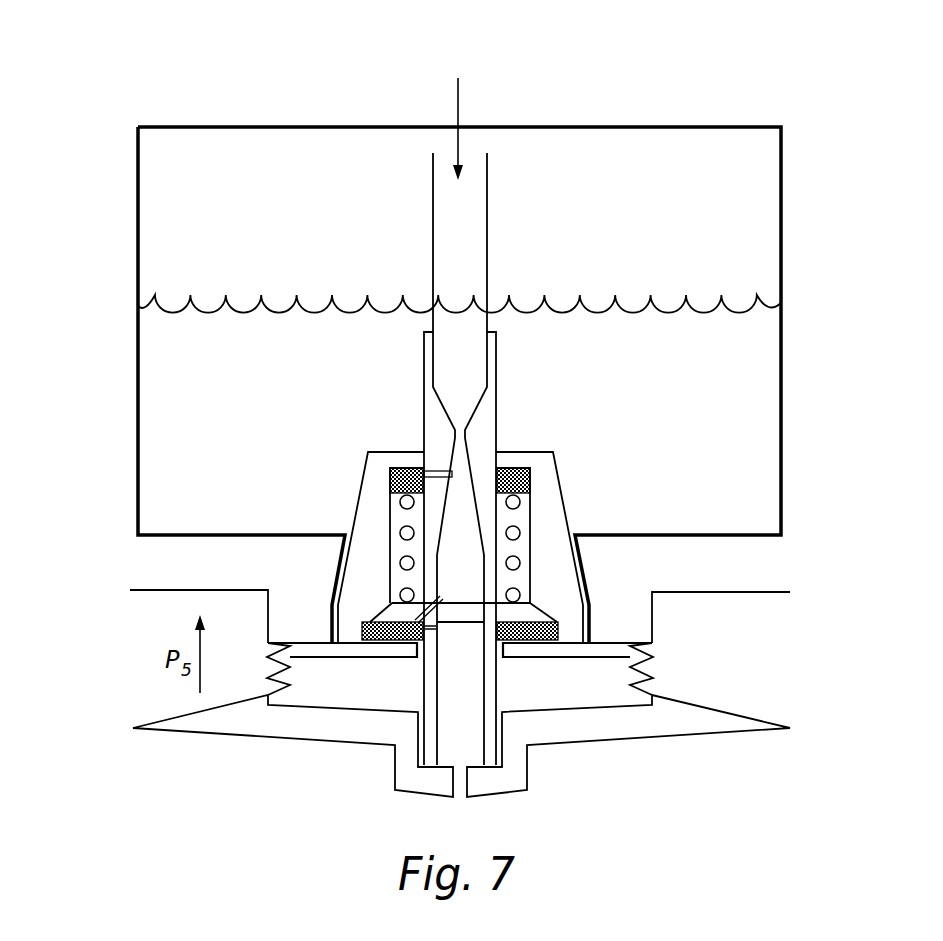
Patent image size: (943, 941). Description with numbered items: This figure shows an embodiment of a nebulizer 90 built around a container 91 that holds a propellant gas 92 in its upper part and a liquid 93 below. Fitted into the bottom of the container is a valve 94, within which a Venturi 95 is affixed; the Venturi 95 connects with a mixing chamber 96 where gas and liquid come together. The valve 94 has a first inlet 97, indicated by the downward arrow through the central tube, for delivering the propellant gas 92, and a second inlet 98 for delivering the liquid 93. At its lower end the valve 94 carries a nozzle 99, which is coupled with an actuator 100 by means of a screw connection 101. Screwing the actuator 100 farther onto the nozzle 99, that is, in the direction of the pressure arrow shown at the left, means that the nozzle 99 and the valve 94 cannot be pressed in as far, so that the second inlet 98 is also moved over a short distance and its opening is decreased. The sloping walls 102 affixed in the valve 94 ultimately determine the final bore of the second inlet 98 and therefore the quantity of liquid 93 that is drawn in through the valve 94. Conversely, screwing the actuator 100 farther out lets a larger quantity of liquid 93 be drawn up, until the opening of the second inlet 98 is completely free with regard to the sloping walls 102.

The nebulizer 90 is at (110, 95).
The container 91 is at (267, 126).
The propellant gas 92 is at (257, 218).
The liquid 93 is at (257, 416).
The valve 94 is at (315, 563).
The Venturi 95 is at (462, 447).
The mixing chamber 96 is at (460, 560).
The first inlet 97 is at (460, 114).
The second inlet 98 is at (440, 477).
The nozzle 99 is at (453, 723).
The actuator 100 is at (717, 688).
The screw connection 101 is at (636, 641).
The sloping walls 102 is at (420, 458).